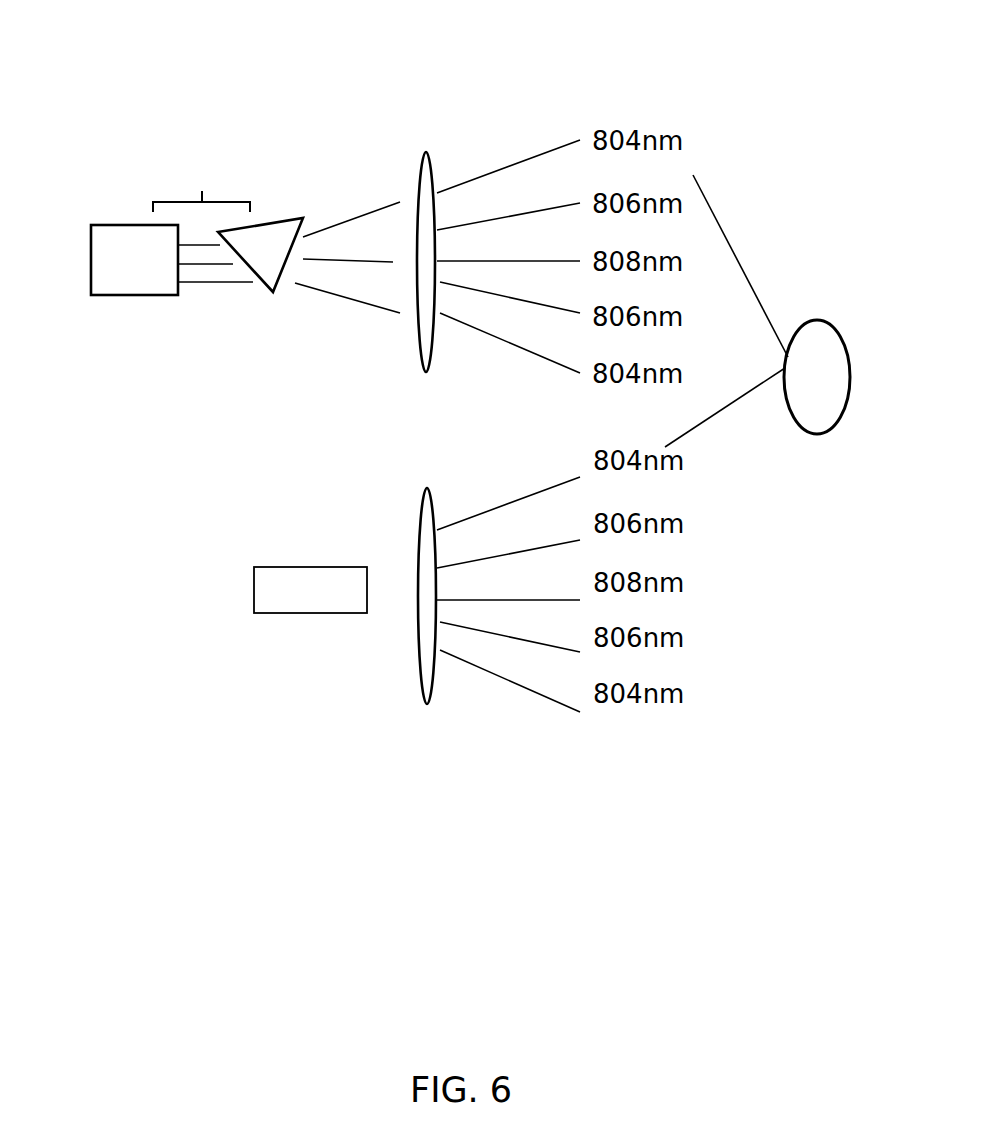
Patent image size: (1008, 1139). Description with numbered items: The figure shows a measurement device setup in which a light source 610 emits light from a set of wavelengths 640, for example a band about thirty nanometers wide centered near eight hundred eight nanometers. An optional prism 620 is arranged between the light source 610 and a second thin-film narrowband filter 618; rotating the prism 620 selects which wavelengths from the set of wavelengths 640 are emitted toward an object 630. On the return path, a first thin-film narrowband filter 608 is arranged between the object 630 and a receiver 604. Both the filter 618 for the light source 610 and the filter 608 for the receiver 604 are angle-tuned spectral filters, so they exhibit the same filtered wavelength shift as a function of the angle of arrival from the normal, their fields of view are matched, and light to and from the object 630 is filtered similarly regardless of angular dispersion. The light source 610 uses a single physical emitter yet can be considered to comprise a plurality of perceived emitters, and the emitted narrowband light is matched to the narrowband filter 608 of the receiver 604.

The receiver 604 is at (275, 592).
The first thin-film narrowband filter 608 is at (428, 622).
The light source 610 is at (108, 243).
The second thin-film narrow band filter 618 is at (423, 175).
The prism 620 is at (273, 238).
The object 630 is at (825, 350).
The set of wavelengths 640 is at (203, 183).